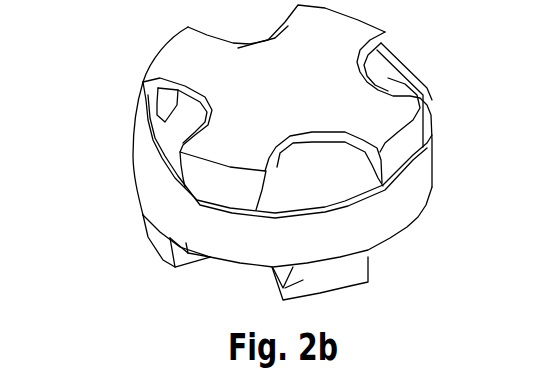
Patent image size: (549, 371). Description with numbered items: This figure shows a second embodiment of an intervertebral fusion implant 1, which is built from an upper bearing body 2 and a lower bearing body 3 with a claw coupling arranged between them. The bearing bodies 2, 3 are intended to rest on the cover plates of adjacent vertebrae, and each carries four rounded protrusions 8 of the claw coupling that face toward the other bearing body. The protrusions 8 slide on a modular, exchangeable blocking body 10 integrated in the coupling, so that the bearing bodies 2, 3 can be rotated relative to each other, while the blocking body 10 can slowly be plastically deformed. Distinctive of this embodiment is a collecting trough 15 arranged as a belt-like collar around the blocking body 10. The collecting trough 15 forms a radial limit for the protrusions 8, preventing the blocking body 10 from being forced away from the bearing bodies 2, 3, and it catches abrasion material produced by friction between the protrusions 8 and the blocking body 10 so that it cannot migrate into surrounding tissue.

The intervertebral fusion implant 1 is at (123, 42).
The upper bearing body 2 is at (377, 105).
The lower bearing body 3 is at (368, 275).
The protrusions 8 is at (408, 147).
The blocking body 10 is at (162, 143).
The collecting trough 15 is at (417, 188).